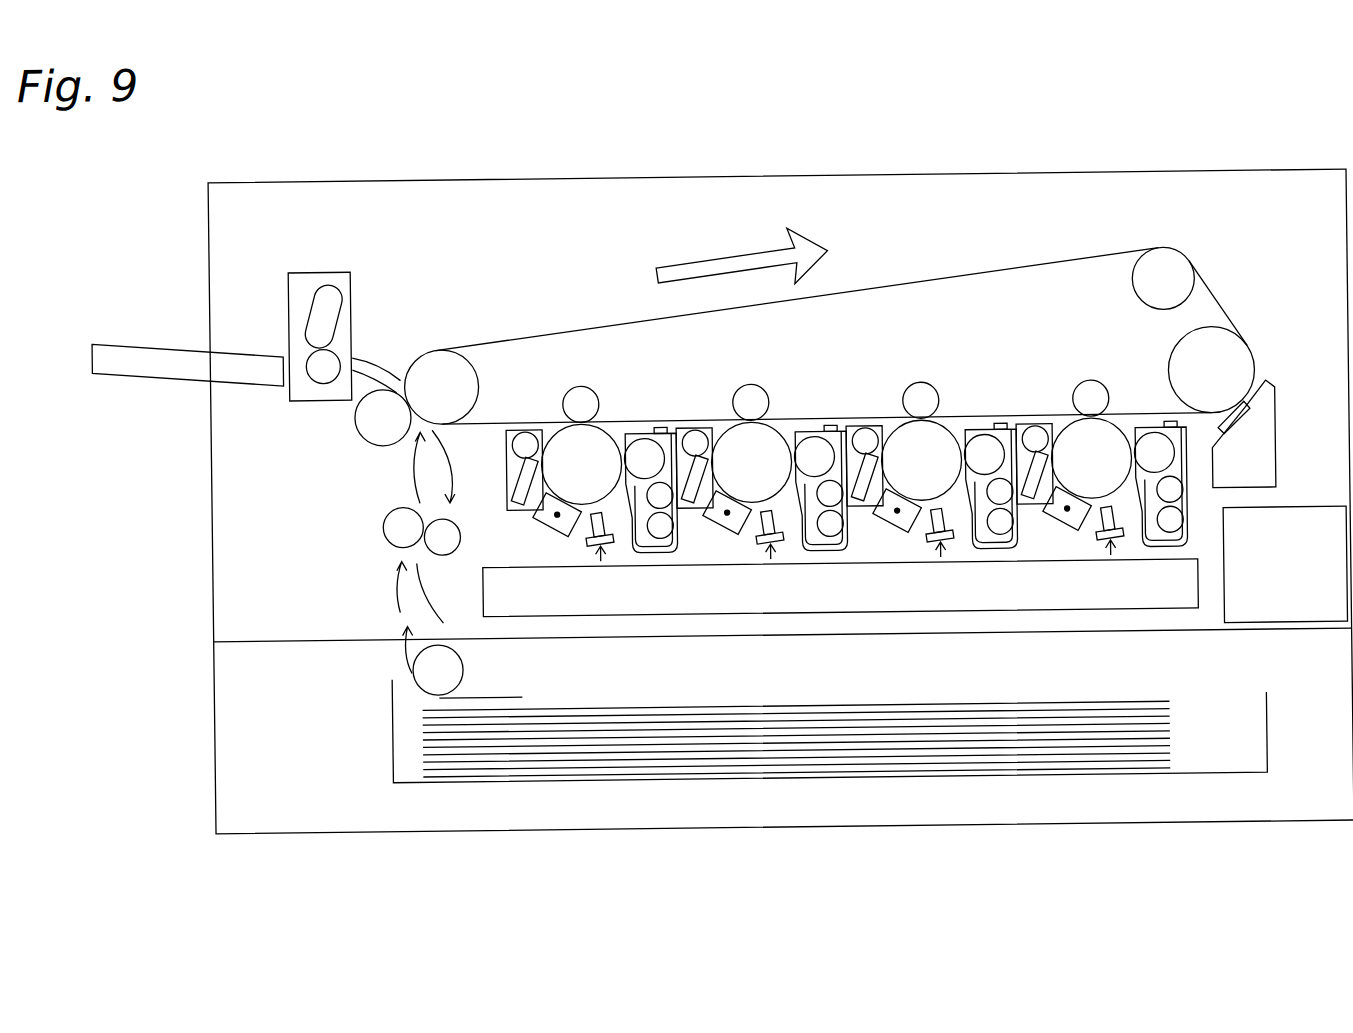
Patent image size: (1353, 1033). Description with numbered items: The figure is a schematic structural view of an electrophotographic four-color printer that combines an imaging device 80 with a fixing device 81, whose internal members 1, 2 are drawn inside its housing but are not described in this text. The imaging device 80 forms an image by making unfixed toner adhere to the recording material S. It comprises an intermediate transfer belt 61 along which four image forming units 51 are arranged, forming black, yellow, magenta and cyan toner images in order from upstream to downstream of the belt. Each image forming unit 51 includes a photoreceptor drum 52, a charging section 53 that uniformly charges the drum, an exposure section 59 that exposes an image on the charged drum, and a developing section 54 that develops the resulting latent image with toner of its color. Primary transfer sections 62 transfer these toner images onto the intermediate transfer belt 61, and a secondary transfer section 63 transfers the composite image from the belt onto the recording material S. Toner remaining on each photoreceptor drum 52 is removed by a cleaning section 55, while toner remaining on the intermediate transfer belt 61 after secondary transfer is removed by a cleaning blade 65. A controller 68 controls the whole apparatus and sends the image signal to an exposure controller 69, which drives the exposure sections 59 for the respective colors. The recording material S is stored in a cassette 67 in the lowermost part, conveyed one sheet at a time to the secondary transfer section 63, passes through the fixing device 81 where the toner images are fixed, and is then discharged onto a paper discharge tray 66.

The fixing belt 1 is at (311, 303).
The pressure roller 2 is at (316, 368).
The image forming unit 51 is at (841, 376).
The photoreceptor drum 52 is at (833, 423).
The charging section 53 is at (809, 587).
The developing section 54 is at (906, 465).
The cleaning section 55 is at (780, 443).
The exposure section 59 is at (859, 595).
The intermediate transfer belt 61 is at (1003, 272).
The primary transfer section 62 is at (872, 373).
The secondary transfer section 63 is at (370, 437).
The cleaning blade 65 is at (1270, 393).
The paper discharge tray 66 is at (132, 334).
The cassette 67 is at (390, 732).
The controller 68 is at (1266, 591).
The exposure controller 69 is at (822, 599).
The imaging device 80 is at (608, 312).
The fixing device 81 is at (328, 267).
The recording material S is at (521, 763).